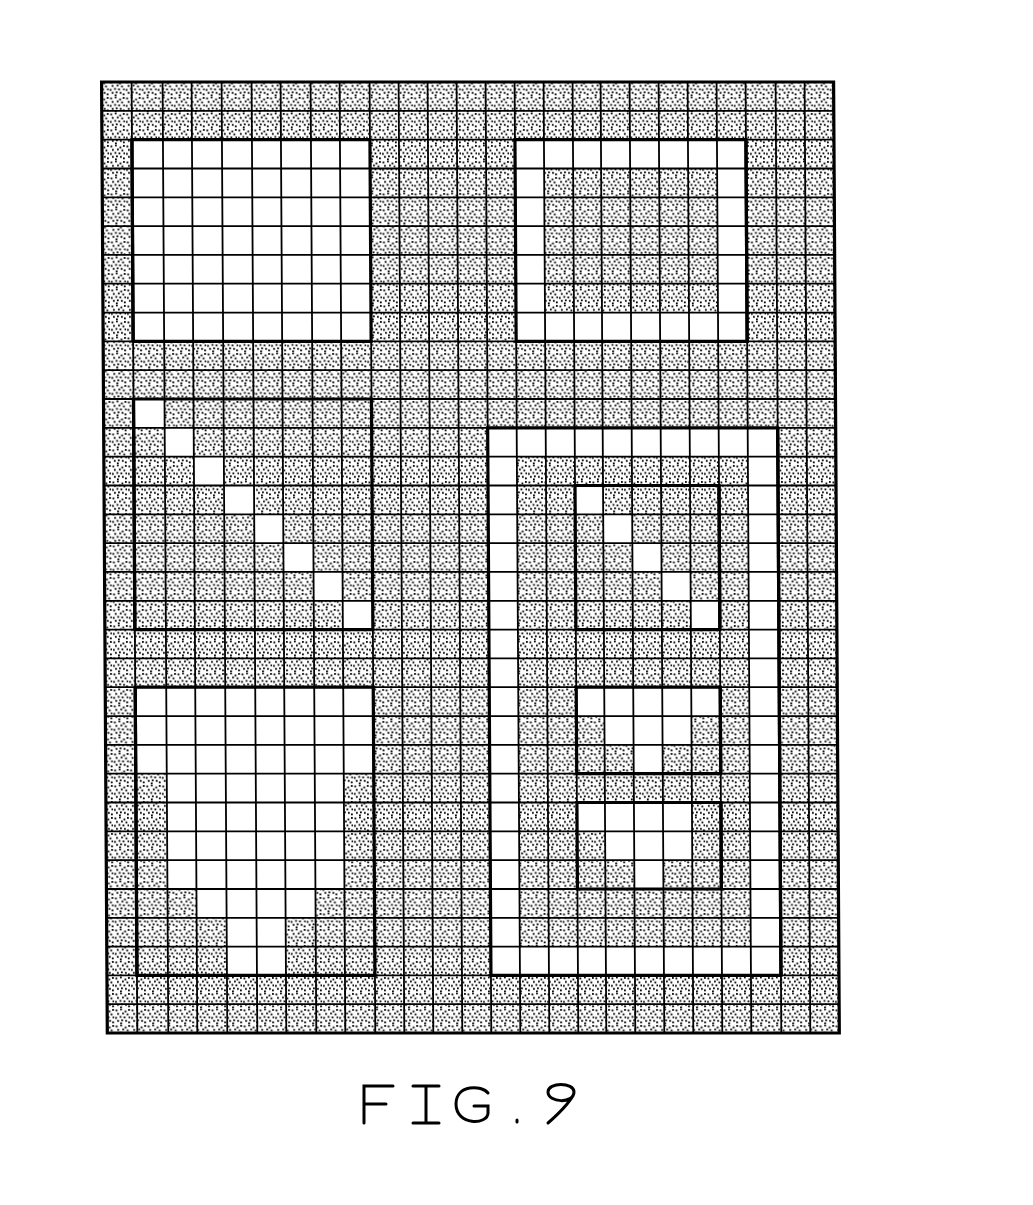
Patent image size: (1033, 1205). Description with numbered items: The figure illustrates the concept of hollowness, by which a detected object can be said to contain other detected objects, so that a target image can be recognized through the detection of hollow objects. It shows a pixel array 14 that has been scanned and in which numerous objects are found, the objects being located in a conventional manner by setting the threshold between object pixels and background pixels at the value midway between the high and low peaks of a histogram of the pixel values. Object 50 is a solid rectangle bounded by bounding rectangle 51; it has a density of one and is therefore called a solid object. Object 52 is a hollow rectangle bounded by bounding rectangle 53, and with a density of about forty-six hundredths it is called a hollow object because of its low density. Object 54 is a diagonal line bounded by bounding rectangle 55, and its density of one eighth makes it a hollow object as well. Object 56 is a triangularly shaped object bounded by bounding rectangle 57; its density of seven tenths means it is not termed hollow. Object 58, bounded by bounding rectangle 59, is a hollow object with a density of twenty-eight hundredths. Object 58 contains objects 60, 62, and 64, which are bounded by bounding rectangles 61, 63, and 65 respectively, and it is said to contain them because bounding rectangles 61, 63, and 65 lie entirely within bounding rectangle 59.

The pixel array 14 is at (472, 95).
The solid rectangle object 50 is at (180, 238).
The bounding rectangle 51 is at (133, 300).
The hollow rectangle object 52 is at (730, 215).
The bounding rectangle 53 is at (748, 297).
The diagonal line object 54 is at (238, 498).
The bounding rectangle 55 is at (133, 587).
The triangularly shaped object 56 is at (242, 847).
The bounding rectangle 57 is at (135, 908).
The hollow object 58 is at (763, 495).
The bounding rectangle 59 is at (778, 527).
The contained object 60 is at (680, 587).
The bounding rectangle 61 is at (720, 613).
The contained object 62 is at (687, 730).
The bounding rectangle 63 is at (722, 757).
The contained object 64 is at (677, 825).
The bounding rectangle 65 is at (723, 872).